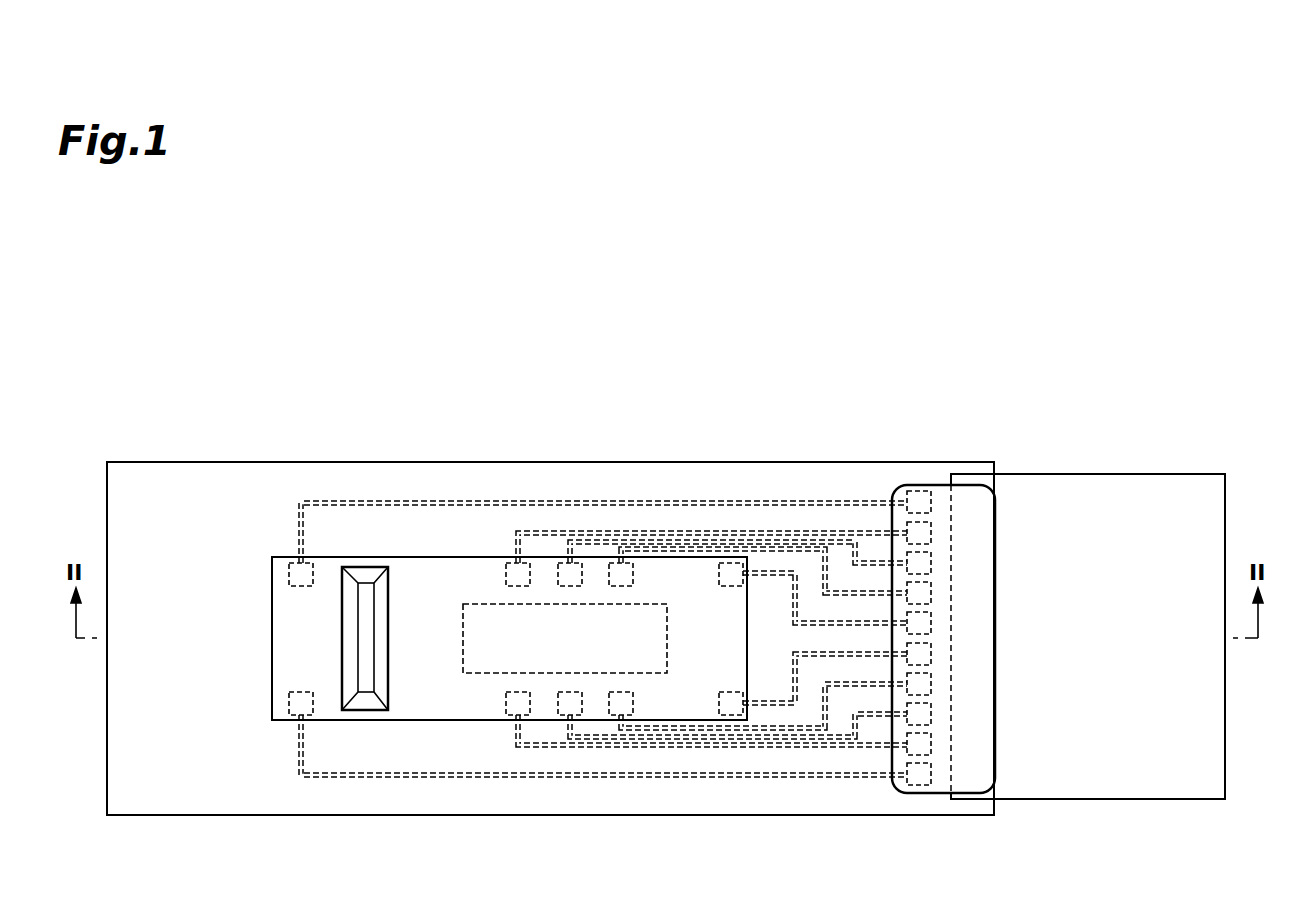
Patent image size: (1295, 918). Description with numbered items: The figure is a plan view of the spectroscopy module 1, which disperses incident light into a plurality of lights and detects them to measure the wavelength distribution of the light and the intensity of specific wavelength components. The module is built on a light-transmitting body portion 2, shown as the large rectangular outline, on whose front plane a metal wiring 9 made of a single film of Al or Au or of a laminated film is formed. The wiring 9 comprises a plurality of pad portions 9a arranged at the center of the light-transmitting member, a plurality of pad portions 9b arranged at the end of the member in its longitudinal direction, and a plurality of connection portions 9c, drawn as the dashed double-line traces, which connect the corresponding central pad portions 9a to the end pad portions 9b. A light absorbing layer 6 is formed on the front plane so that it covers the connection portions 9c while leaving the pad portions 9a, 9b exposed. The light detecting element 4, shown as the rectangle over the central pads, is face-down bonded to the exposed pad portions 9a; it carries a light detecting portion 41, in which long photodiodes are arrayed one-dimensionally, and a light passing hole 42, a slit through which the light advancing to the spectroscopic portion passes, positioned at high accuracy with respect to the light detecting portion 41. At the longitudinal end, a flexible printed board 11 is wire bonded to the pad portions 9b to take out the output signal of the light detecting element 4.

The spectroscopy module 1 is at (186, 300).
The body portion 2 is at (183, 440).
The light detecting element 4 is at (509, 625).
The light absorbing layer 6 is at (278, 497).
The wiring 9 is at (685, 632).
The pad portions 9a is at (317, 574).
The pad portions 9b is at (931, 508).
The connection portions 9c is at (762, 571).
The flexible printed board 11 is at (1105, 488).
The light detecting portion 41 is at (492, 660).
The light passing hole 42 is at (355, 703).